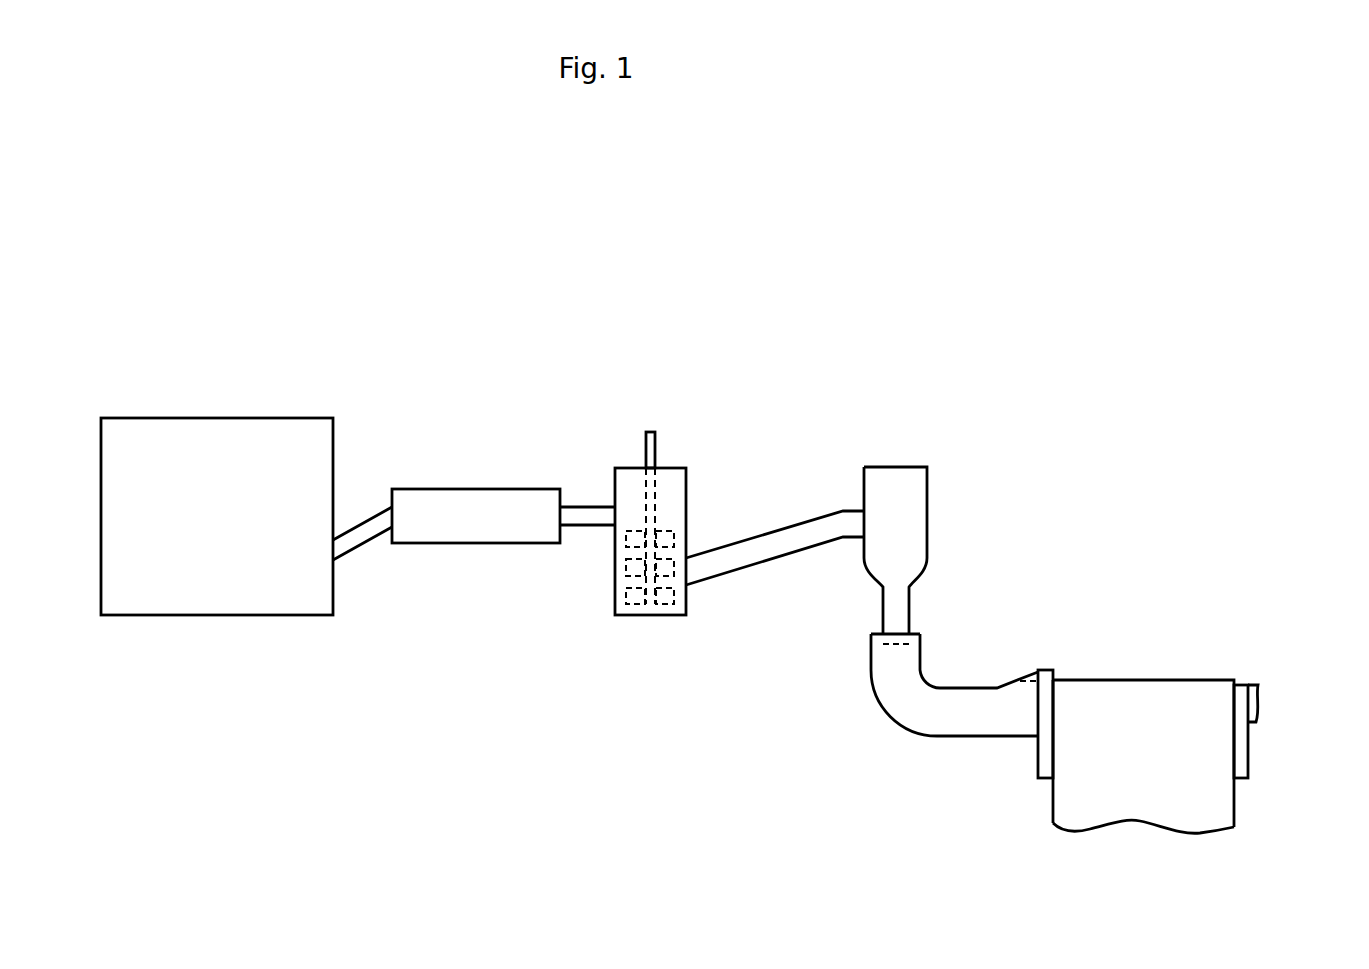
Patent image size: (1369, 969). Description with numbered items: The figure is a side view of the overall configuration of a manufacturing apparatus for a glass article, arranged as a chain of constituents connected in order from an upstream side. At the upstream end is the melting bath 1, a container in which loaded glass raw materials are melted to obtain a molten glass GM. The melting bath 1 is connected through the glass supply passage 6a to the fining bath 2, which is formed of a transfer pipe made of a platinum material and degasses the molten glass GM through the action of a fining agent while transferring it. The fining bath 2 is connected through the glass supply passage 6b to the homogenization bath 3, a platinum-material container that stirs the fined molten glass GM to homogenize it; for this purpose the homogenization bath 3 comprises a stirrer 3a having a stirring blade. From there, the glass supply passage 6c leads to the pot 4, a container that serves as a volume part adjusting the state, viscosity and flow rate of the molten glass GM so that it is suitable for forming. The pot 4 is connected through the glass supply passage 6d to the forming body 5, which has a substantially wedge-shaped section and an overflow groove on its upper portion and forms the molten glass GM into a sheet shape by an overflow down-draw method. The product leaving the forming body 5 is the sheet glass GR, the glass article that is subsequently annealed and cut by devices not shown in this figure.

The melting bath 1 is at (222, 432).
The fining bath 2 is at (480, 499).
The homogenization bath 3 is at (670, 467).
The stirrer 3a is at (657, 497).
The pot 4 is at (917, 509).
The forming body 5 is at (1240, 747).
The glass supply passage 6a is at (358, 533).
The glass supply passage 6b is at (585, 517).
The glass supply passage 6c is at (793, 537).
The glass supply passage 6d is at (963, 727).
The molten glass GM is at (1147, 695).
The sheet glass GR is at (1235, 807).